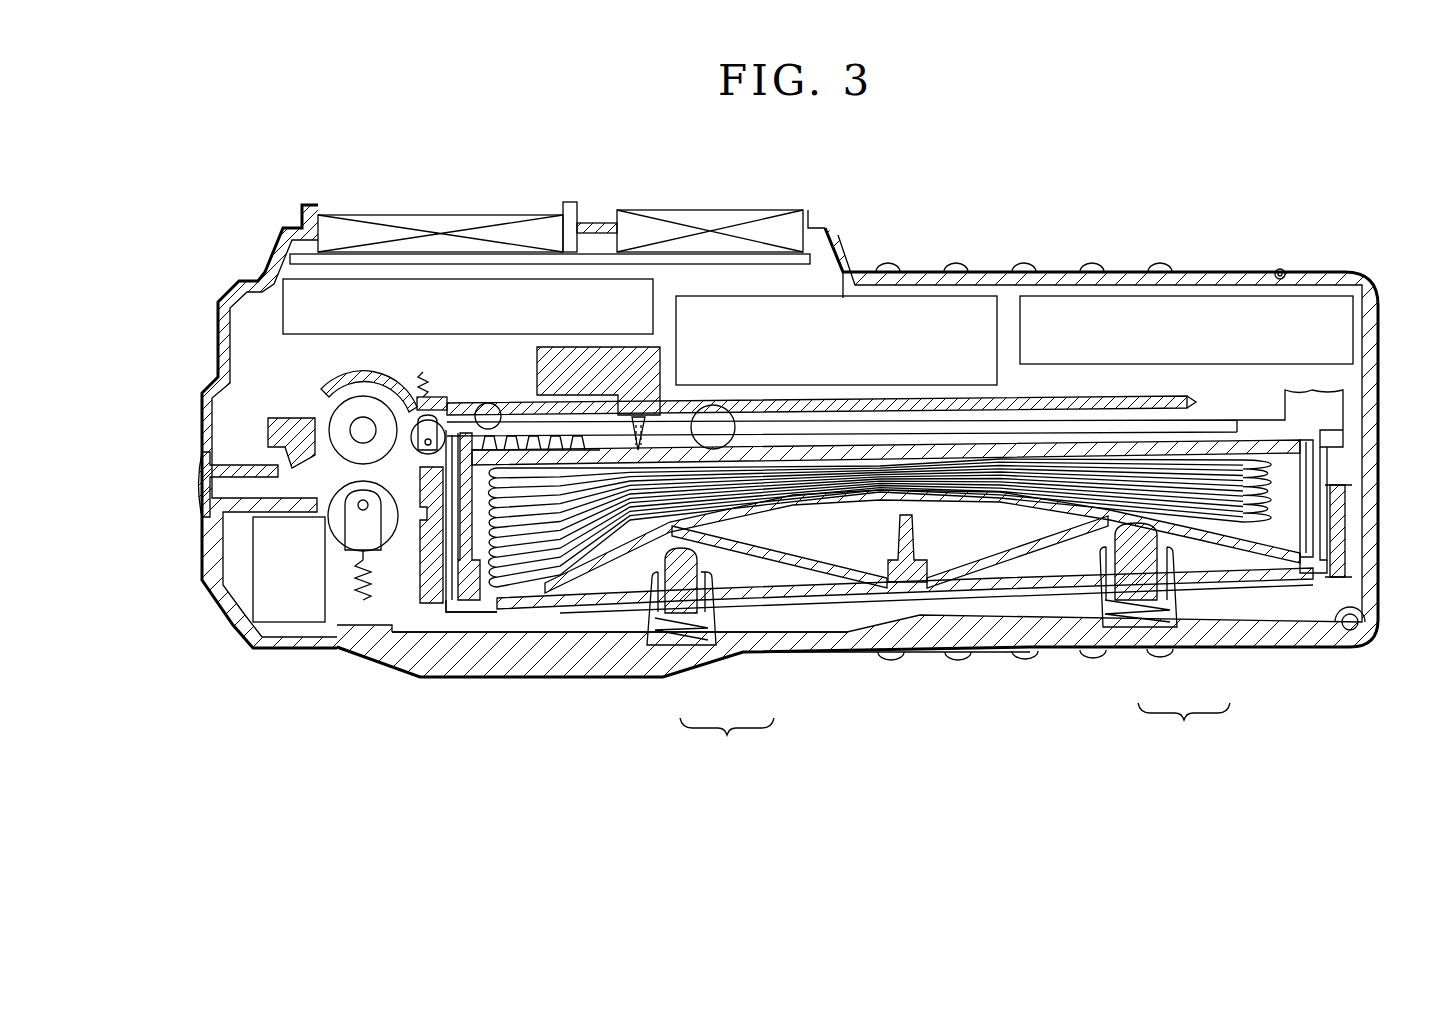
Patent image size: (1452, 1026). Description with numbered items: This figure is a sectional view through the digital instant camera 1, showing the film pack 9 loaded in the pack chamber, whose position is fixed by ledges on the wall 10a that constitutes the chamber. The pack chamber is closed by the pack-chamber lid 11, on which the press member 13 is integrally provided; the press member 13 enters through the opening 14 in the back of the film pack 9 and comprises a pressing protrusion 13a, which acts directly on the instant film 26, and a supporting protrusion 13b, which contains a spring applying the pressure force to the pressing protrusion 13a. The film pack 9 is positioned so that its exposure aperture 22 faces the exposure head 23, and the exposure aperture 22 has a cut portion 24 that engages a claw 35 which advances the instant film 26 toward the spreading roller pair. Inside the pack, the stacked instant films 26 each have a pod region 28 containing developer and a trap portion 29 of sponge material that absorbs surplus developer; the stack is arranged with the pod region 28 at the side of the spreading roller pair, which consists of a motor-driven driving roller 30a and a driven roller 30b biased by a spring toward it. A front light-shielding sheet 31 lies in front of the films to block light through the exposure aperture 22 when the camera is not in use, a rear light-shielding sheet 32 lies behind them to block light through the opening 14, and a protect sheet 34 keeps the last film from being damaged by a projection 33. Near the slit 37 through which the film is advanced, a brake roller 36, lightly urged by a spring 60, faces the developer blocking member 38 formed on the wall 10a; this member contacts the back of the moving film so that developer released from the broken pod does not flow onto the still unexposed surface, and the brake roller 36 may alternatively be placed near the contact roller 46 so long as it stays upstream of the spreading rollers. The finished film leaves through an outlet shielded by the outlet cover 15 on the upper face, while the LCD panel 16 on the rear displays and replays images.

The digital instant camera 1 is at (978, 222).
The film pack 9 is at (560, 648).
The wall 10a is at (1065, 400).
The pack-chamber lid 11 is at (935, 635).
The press member 13 is at (955, 734).
The pressing protrusion 13a is at (685, 612).
The supporting protrusion 13b is at (725, 615).
The opening 14 is at (625, 610).
The outlet cover 15 is at (200, 478).
The LCD panel 16 is at (430, 214).
The exposure aperture 22 is at (940, 438).
The exposure head 23 is at (584, 347).
The cut portion 24 is at (1320, 470).
The instant film 26 is at (875, 475).
The pod region 28 is at (495, 590).
The trap portion 29 is at (1305, 573).
The driving roller 30a is at (330, 425).
The driven roller 30b is at (345, 525).
The front light-shielding sheet 31 is at (1185, 448).
The rear light-shielding sheet 32 is at (795, 562).
The projection 33 is at (912, 538).
The protect sheet 34 is at (853, 505).
The claw 35 is at (1310, 410).
The brake roller 36 is at (440, 420).
The slit 37 is at (488, 406).
The developer blocking member 38 is at (370, 425).
The contact roller 46 is at (713, 405).
The spring 60 is at (423, 372).